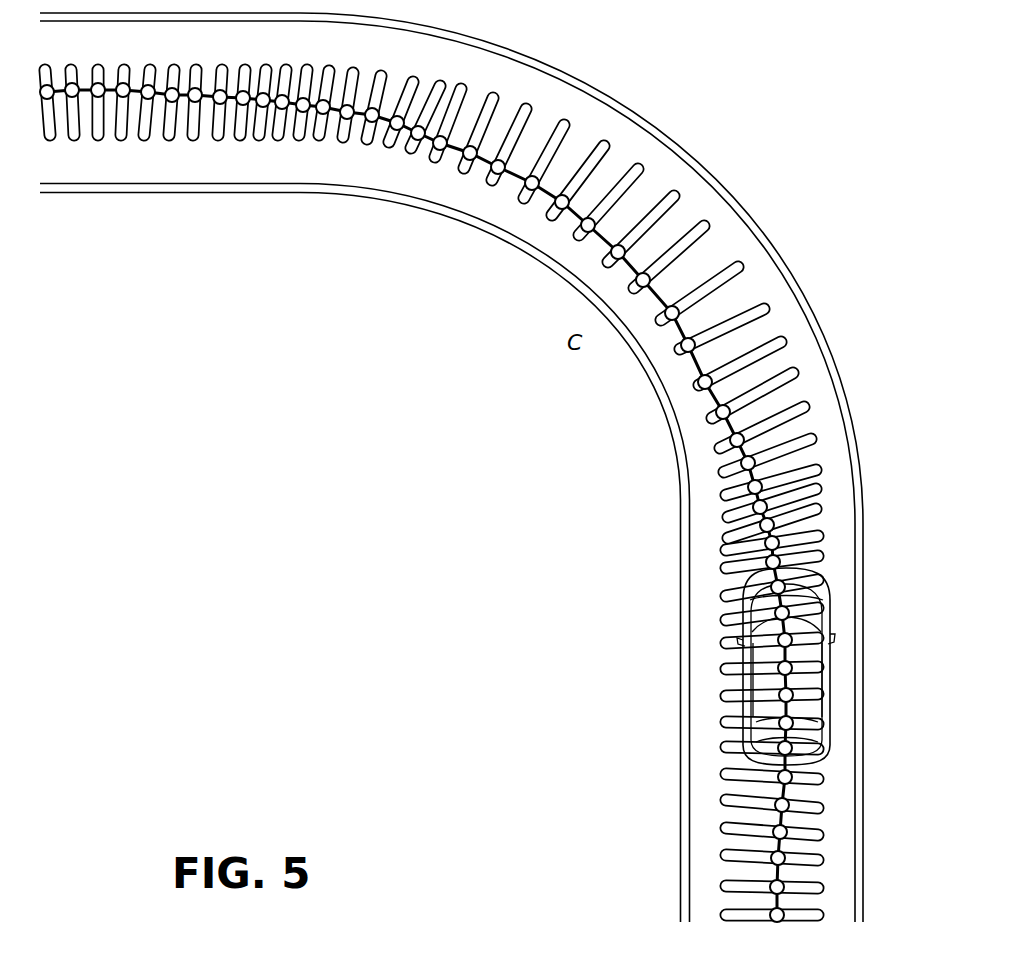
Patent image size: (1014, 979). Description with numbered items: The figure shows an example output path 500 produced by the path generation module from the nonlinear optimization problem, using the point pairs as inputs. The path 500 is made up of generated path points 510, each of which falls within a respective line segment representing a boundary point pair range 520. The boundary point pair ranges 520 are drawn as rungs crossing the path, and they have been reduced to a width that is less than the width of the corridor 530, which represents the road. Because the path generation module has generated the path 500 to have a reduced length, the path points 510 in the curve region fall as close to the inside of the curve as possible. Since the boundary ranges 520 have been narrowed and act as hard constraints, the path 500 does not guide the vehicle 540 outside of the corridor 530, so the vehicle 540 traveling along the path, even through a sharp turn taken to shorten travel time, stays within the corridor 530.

The path 500 is at (573, 214).
The path points 510 is at (784, 886).
The boundary point pair ranges 520 is at (781, 338).
The corridor 530 is at (681, 820).
The vehicle 540 is at (832, 598).